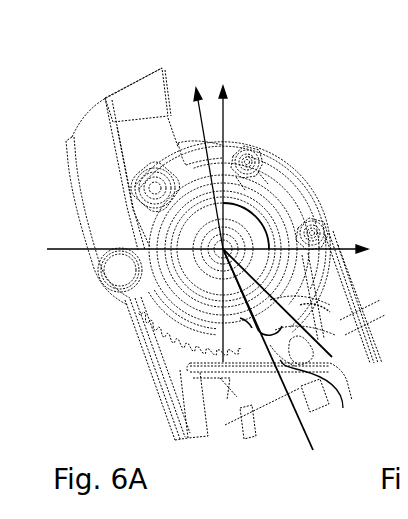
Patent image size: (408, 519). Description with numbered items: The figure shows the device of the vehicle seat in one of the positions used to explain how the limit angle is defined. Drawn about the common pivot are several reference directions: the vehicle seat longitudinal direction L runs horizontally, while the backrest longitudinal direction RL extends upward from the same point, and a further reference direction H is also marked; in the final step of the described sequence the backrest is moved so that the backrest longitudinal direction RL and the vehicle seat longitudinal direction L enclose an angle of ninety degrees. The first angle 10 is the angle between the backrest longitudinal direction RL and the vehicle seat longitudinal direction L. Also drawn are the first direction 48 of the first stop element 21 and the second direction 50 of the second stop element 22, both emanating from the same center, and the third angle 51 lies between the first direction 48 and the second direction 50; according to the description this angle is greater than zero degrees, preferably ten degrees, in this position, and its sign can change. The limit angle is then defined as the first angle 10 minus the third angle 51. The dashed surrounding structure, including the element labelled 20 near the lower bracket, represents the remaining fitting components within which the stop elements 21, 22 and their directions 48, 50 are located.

The first angle 10 is at (270, 225).
The bracket plate 20 is at (278, 350).
The first stop element 21 is at (300, 318).
The second stop element 22 is at (313, 386).
The first direction 48 is at (332, 348).
The second direction 50 is at (310, 450).
The third angle 51 is at (284, 326).
The horizontal reference direction H is at (226, 106).
The backrest longitudinal direction RL is at (204, 108).
The vehicle seat longitudinal direction L is at (352, 246).